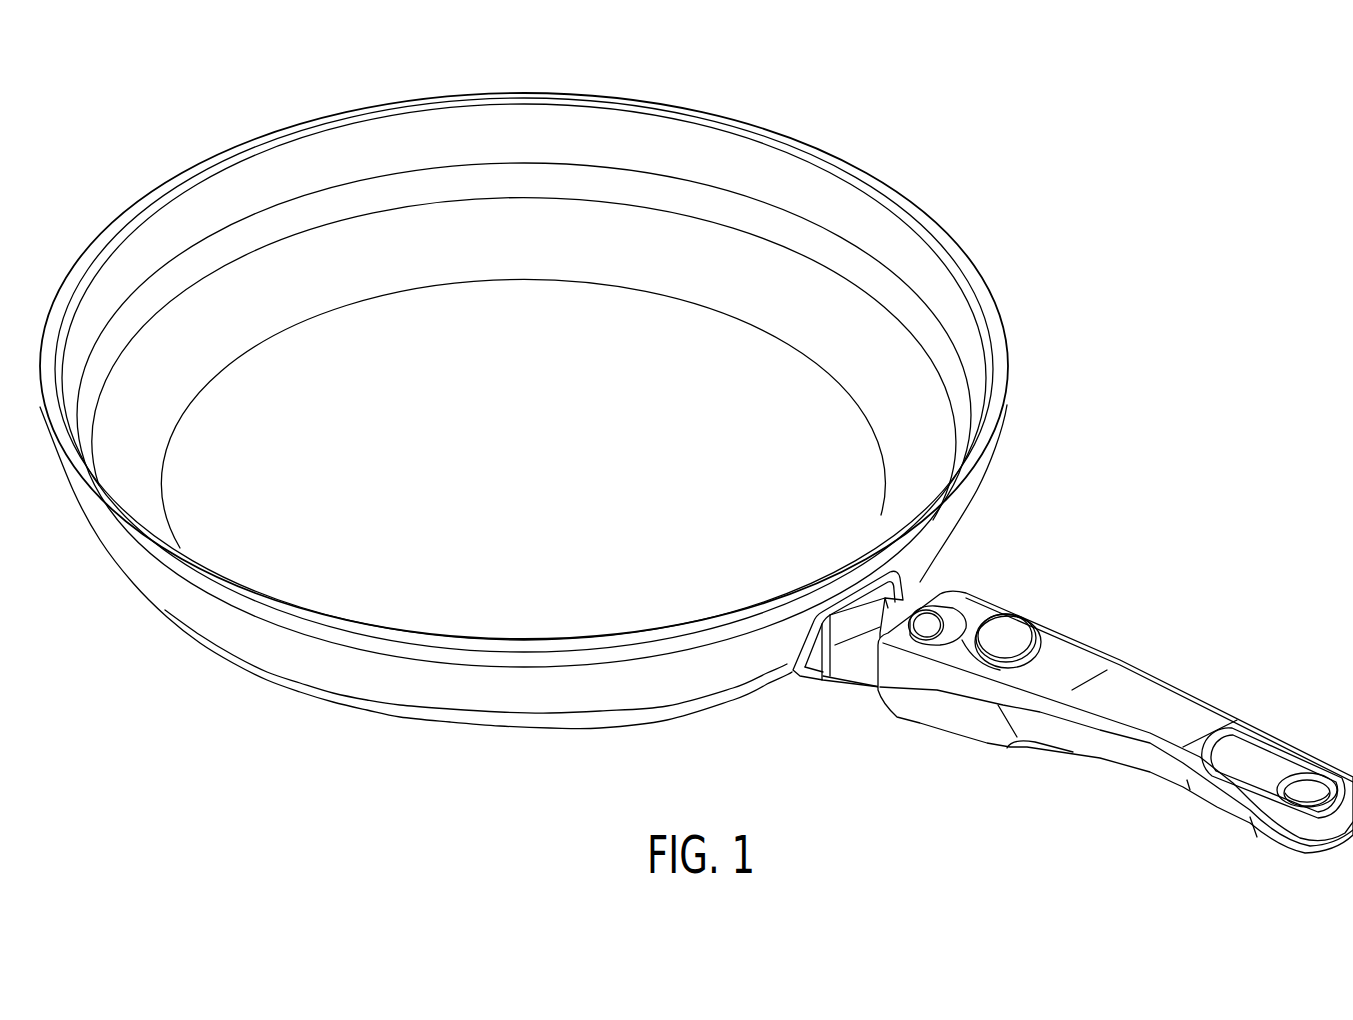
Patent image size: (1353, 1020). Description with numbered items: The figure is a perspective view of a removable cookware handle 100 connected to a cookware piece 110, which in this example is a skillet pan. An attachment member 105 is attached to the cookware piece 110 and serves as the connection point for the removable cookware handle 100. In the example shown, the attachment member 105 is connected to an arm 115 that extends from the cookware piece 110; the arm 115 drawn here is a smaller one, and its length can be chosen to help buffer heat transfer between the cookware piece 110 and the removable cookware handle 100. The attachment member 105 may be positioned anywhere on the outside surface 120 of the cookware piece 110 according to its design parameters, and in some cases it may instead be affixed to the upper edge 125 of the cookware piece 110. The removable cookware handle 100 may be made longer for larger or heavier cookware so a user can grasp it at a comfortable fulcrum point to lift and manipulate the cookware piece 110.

The removable cookware handle 100 is at (1115, 684).
The attachment member 105 is at (888, 732).
The cookware piece 110 is at (553, 418).
The arm 115 is at (933, 593).
The outside surface 120 is at (420, 692).
The upper edge 125 is at (995, 323).